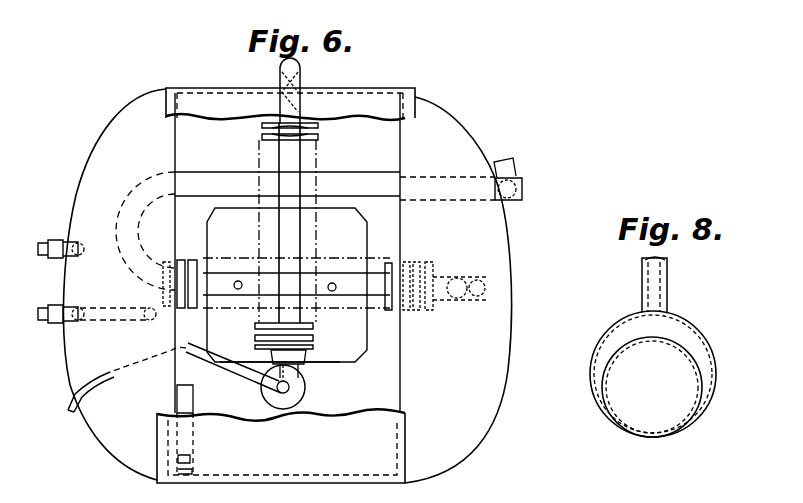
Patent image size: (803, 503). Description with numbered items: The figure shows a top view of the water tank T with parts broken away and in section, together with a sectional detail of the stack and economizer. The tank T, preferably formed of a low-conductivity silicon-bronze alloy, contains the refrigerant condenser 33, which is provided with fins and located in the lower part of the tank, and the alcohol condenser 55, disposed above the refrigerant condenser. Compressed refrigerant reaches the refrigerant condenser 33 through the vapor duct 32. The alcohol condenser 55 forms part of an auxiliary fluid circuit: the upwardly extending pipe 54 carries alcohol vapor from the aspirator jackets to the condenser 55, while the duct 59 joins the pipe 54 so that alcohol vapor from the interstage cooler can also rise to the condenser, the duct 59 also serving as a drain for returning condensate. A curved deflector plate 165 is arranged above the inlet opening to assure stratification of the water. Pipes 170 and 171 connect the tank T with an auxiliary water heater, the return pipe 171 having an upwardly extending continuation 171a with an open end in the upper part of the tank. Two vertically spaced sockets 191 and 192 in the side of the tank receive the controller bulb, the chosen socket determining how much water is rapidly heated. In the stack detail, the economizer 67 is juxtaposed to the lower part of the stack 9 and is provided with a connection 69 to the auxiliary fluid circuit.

In FIG. 6, the pipe 54 is at (280, 64).
In FIG. 6, the duct 59 is at (303, 84).
In FIG. 6, the alcohol condenser 55 is at (322, 154).
In FIG. 6, the vapor duct 32 is at (512, 165).
In FIG. 6, the refrigerant condenser 33 is at (192, 236).
In FIG. 6, the curved deflector plate 165 is at (327, 344).
In FIG. 6, the water tank T is at (86, 460).
In FIG. 6, the pipe 170 is at (42, 246).
In FIG. 6, the return pipe 171 is at (44, 322).
In FIG. 6, the upwardly extending continuation 171a is at (132, 320).
In FIG. 6, the socket 191 is at (191, 457).
In FIG. 6, the socket 192 is at (192, 471).
In FIG. 8, the economizer 67 is at (706, 334).
In FIG. 8, the stack 9 is at (660, 438).
In FIG. 8, the connection 69 is at (660, 286).